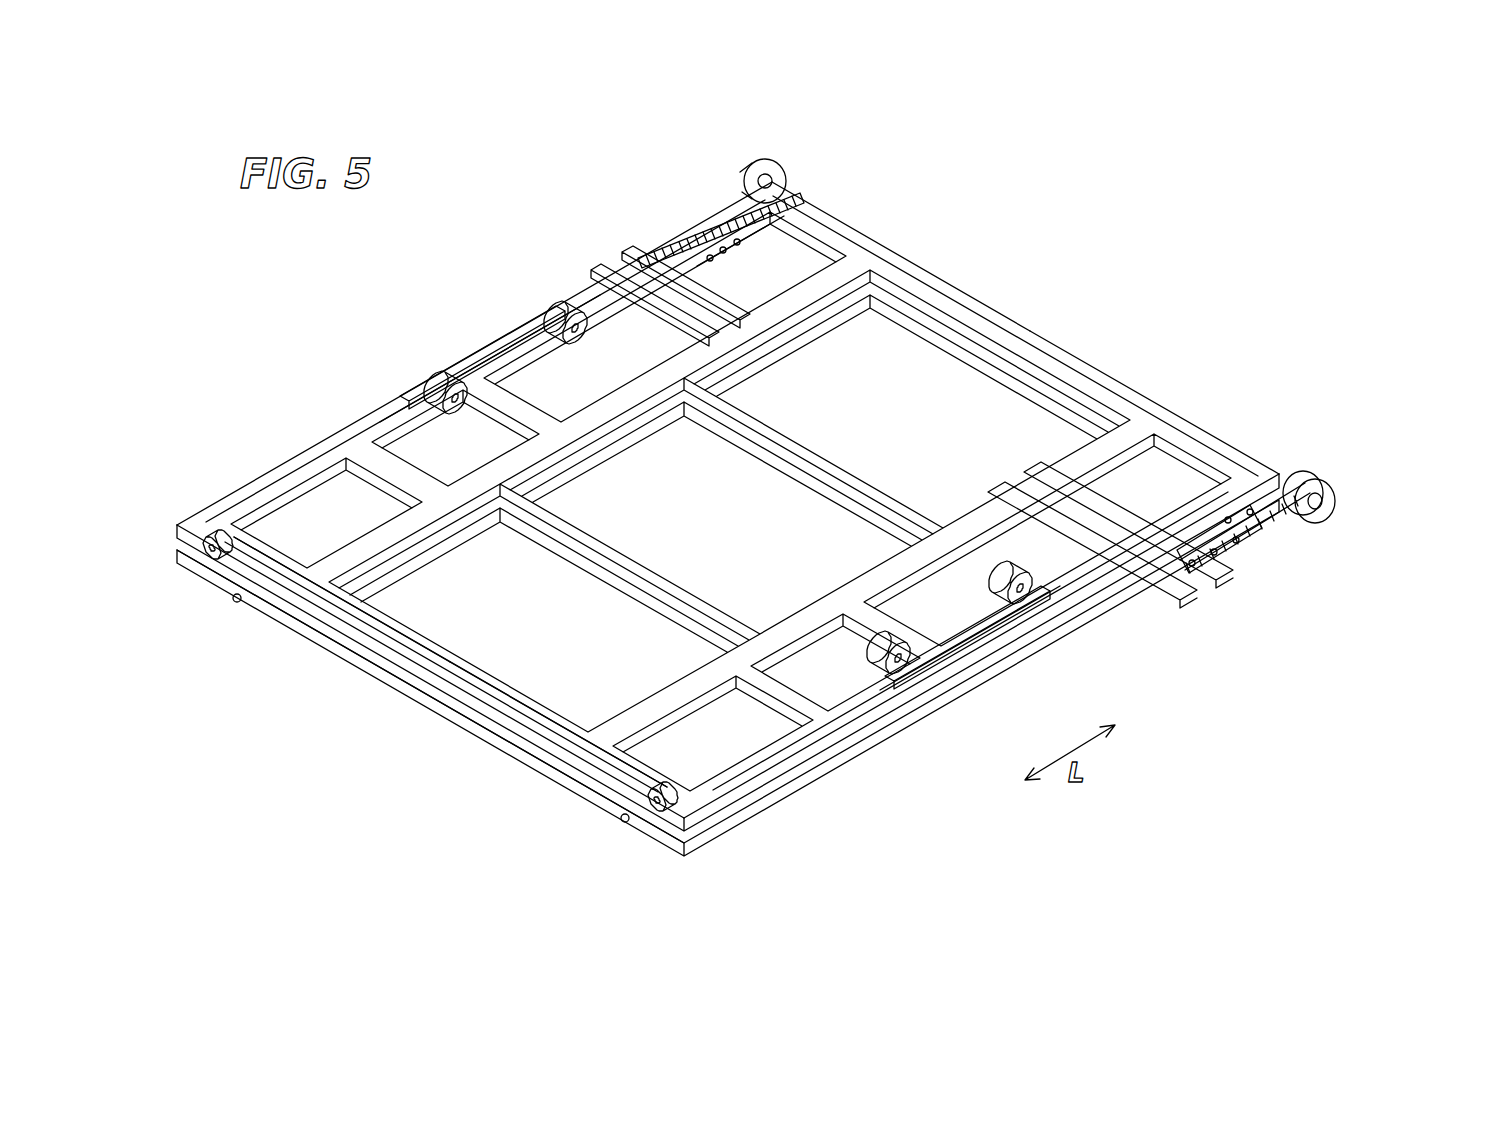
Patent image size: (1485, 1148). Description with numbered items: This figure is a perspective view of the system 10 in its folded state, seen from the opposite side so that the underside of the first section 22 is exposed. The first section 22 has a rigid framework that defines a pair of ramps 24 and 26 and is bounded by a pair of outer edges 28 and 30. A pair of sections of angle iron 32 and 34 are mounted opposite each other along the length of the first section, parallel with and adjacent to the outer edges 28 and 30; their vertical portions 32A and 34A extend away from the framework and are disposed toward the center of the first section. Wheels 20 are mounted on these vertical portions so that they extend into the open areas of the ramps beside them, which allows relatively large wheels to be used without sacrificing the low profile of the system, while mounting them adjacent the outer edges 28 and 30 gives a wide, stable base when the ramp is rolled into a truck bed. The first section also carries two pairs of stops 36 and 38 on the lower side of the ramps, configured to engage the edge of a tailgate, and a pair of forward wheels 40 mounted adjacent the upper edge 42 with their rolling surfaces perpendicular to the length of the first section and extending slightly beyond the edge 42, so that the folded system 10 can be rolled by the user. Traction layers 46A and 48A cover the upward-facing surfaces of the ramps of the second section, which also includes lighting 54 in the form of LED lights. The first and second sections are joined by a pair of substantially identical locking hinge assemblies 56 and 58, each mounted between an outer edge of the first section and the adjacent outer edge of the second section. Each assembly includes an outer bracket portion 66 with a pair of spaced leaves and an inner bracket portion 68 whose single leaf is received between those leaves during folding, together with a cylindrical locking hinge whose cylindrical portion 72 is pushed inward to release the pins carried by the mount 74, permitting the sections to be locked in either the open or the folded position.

The system 10 is at (1065, 265).
The wheels 20 is at (445, 392).
The first section 22 is at (272, 487).
The ramp 24 is at (820, 217).
The ramp 26 is at (1165, 400).
The outer edge 28 is at (370, 425).
The outer edge 30 is at (790, 748).
The section of angle iron 32 is at (505, 350).
The vertical portion 32A is at (512, 352).
The section of angle iron 34 is at (995, 632).
The vertical portion 34A is at (935, 600).
The stops 36 is at (612, 290).
The stops 38 is at (653, 268).
The forward wheels 40 is at (205, 545).
The upper edge 42 is at (460, 665).
The traction layer 46A is at (285, 592).
The traction layer 48A is at (602, 772).
The lighting 54 is at (235, 602).
The locking hinge assembly 56 is at (768, 174).
The locking hinge assembly 58 is at (1320, 529).
The outer bracket portion 66 is at (1285, 510).
The inner bracket portion 68 is at (1225, 528).
The cylindrical portion 72 is at (748, 170).
The mount 74 is at (800, 190).